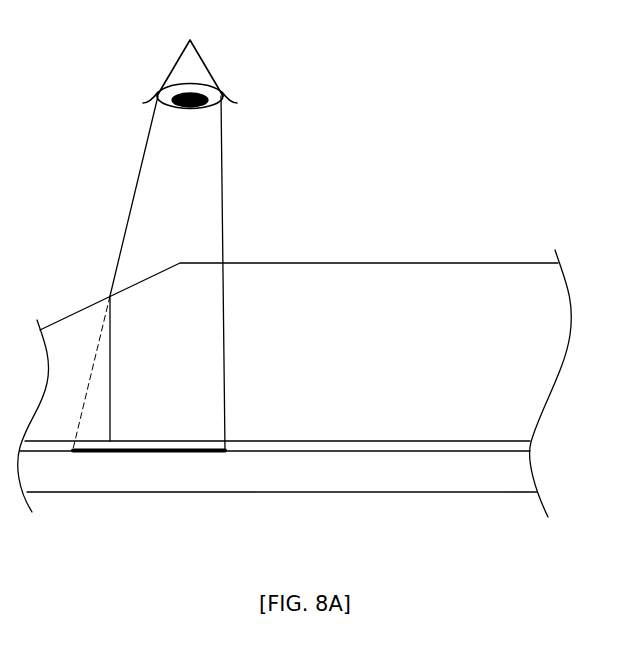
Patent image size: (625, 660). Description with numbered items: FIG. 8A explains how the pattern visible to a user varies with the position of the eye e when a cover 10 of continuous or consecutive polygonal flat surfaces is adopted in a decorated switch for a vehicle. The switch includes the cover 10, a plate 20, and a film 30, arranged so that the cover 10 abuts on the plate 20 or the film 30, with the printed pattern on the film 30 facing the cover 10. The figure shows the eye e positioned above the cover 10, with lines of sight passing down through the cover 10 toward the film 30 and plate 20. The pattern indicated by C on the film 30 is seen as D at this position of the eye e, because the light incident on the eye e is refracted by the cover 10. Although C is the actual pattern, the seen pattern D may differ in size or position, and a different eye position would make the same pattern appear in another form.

The eye e is at (202, 62).
The cover 10 is at (487, 280).
The film 30 is at (520, 447).
The plate 20 is at (520, 477).
The pattern C is at (220, 440).
The seen pattern D is at (205, 453).